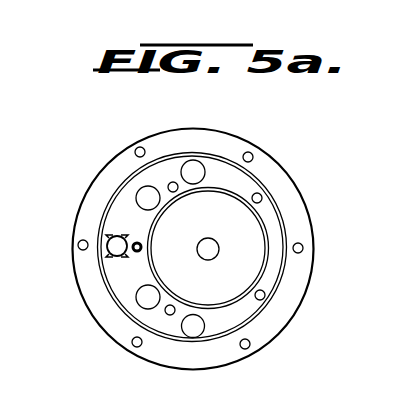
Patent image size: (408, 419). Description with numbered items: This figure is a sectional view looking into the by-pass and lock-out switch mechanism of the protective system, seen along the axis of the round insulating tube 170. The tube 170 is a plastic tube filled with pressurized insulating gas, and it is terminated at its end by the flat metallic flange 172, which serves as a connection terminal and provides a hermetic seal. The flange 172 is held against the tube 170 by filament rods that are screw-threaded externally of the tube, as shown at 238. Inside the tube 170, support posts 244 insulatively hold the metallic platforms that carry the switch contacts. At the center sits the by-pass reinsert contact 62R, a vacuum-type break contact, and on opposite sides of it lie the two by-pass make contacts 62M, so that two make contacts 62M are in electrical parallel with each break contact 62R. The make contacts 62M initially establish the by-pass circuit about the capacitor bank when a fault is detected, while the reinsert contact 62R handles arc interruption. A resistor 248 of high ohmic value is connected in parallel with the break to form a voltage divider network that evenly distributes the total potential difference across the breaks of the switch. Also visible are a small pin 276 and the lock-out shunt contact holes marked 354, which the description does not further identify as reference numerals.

The flat metallic flange 172 is at (292, 179).
The round insulating tube 170 is at (115, 189).
The by-pass reinsert contacts 62R is at (265, 257).
The by-pass make contacts 62M is at (195, 157).
The locating holes (354 Lo) 354 is at (135, 147).
The screw-threaded filament rod location 238 is at (253, 153).
The support posts 244 is at (262, 200).
The resistors 248 is at (107, 249).
The pin 276 is at (134, 251).